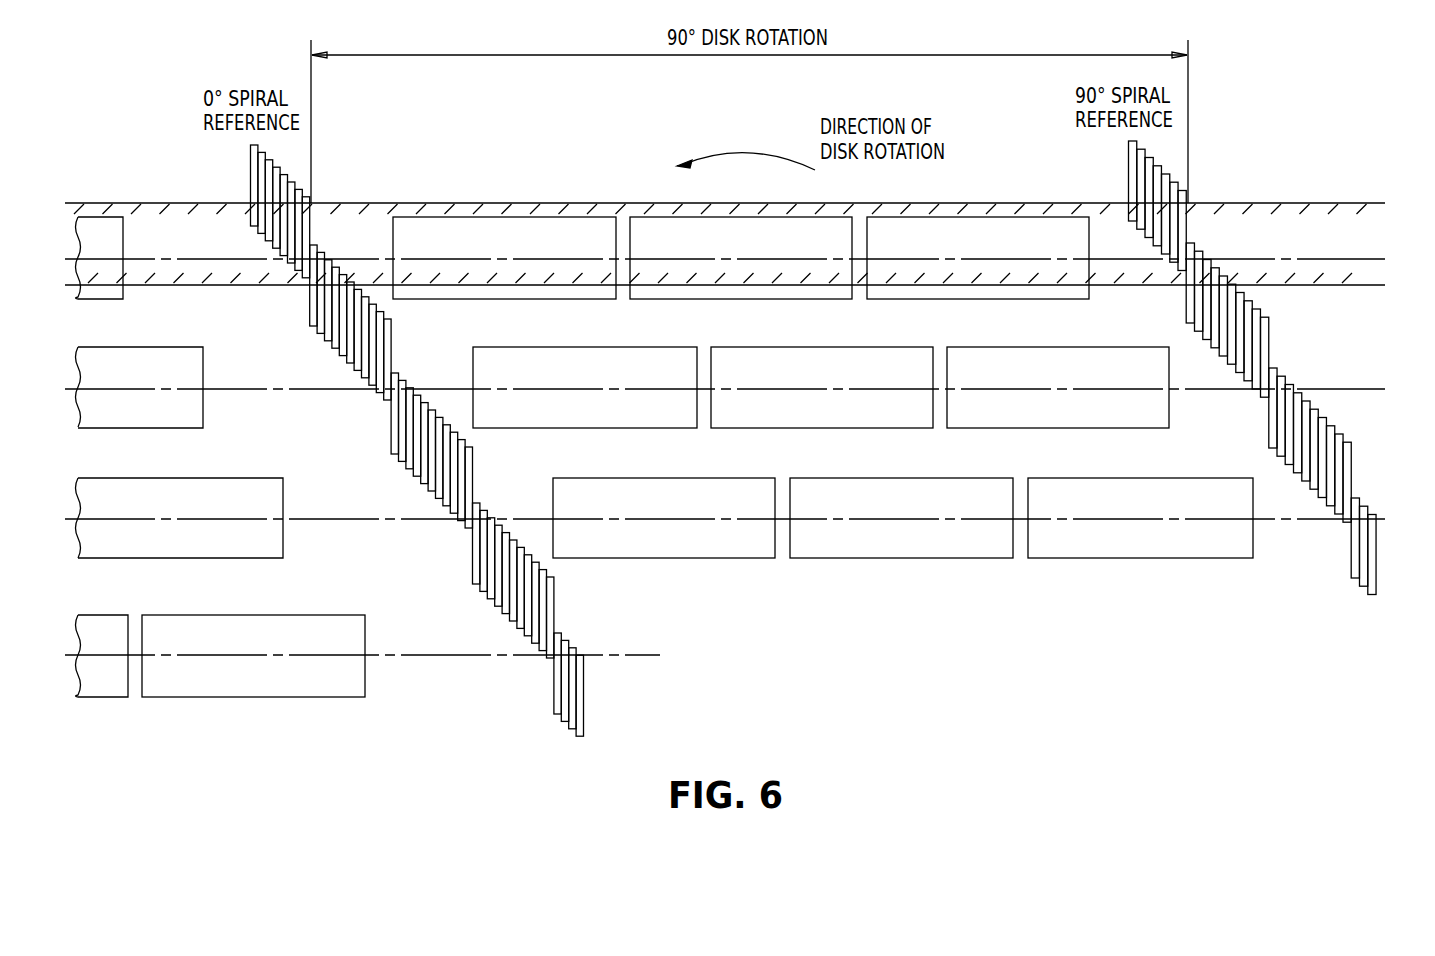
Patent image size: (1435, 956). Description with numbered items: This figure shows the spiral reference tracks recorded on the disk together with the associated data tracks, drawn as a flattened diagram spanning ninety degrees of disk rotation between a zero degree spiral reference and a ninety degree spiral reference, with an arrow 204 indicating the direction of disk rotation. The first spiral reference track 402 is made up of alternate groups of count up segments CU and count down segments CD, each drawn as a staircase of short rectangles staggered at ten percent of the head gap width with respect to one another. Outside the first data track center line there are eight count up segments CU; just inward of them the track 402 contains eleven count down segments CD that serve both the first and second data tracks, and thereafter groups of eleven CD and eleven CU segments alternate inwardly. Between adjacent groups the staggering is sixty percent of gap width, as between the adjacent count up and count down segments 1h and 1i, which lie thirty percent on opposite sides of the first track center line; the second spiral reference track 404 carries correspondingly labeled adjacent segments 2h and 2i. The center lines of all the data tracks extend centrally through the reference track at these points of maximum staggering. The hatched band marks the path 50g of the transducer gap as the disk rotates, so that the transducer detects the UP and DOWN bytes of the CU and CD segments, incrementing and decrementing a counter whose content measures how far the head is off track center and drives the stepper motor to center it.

The transducer gap path 50g is at (130, 203).
The spiral reference track 402 is at (353, 209).
The spiral reference track 404 is at (1201, 211).
The direction of disk rotation arrow 204 is at (747, 152).
The count up segment 1h is at (310, 233).
The count down segment 1i is at (310, 316).
The second spiral head segment 2h is at (1188, 233).
The second spiral intermediate segment 2i is at (1187, 316).
The count up segments CU is at (444, 437).
The count down segments CD is at (431, 451).